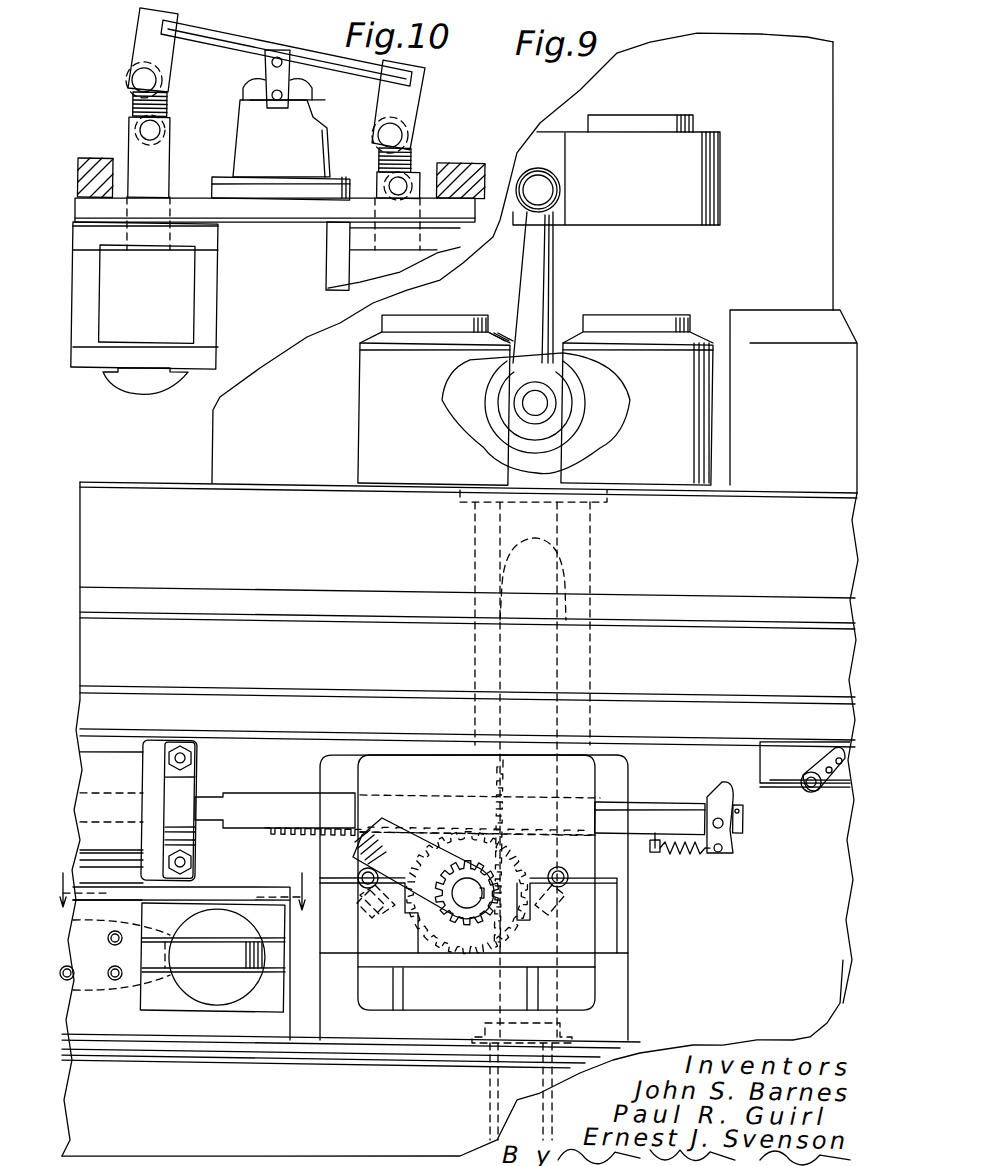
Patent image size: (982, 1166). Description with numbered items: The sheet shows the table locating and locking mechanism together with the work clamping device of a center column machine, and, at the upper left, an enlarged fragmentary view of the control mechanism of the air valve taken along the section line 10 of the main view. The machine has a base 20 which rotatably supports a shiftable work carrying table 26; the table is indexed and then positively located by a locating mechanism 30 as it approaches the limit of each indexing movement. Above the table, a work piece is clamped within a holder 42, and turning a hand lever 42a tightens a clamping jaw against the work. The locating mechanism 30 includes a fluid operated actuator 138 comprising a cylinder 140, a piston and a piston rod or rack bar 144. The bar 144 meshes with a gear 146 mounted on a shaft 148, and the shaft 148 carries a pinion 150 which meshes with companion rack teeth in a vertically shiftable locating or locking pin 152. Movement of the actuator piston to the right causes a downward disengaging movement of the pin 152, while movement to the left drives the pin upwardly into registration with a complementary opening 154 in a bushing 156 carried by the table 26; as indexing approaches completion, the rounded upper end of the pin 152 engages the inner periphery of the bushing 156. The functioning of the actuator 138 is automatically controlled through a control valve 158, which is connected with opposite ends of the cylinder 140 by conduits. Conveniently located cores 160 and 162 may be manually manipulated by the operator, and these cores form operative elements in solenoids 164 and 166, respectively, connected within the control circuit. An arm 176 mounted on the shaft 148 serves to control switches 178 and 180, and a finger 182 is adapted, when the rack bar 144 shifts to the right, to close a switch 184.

In FIG. 9, the section line 10— 10 is at (188, 880).
In FIG. 10, the base 20 is at (451, 172).
In FIG. 9, the base 20 is at (451, 1057).
In FIG. 9, the work carrying table 26 is at (460, 823).
In FIG. 9, the locating mechanism 30 is at (656, 886).
In FIG. 9, the holder 42 is at (729, 171).
In FIG. 9, the hand lever 42a is at (547, 189).
In FIG. 9, the fluid operated actuator 138 is at (130, 755).
In FIG. 9, the cylinder 140 is at (111, 817).
In FIG. 9, the rack bar 144 is at (264, 805).
In FIG. 9, the gear 146 is at (425, 829).
In FIG. 9, the shaft 148 is at (471, 898).
In FIG. 9, the pinion 150 is at (482, 835).
In FIG. 9, the locating or locking pin 152 is at (551, 541).
In FIG. 9, the opening 154 is at (554, 521).
In FIG. 9, the bushing 156 is at (476, 531).
In FIG. 10, the control valve 158 is at (236, 127).
In FIG. 9, the control valve 158 is at (104, 994).
In FIG. 10, the core 160 is at (130, 391).
In FIG. 9, the core 162 is at (213, 964).
In FIG. 10, the solenoid 164 is at (182, 288).
In FIG. 10, the solenoid 166 is at (350, 264).
In FIG. 9, the solenoid 166 is at (224, 914).
In FIG. 9, the arm 176 is at (360, 849).
In FIG. 9, the switch 178 is at (380, 904).
In FIG. 9, the switch 180 is at (583, 902).
In FIG. 9, the finger 182 is at (719, 774).
In FIG. 9, the switch 184 is at (815, 789).